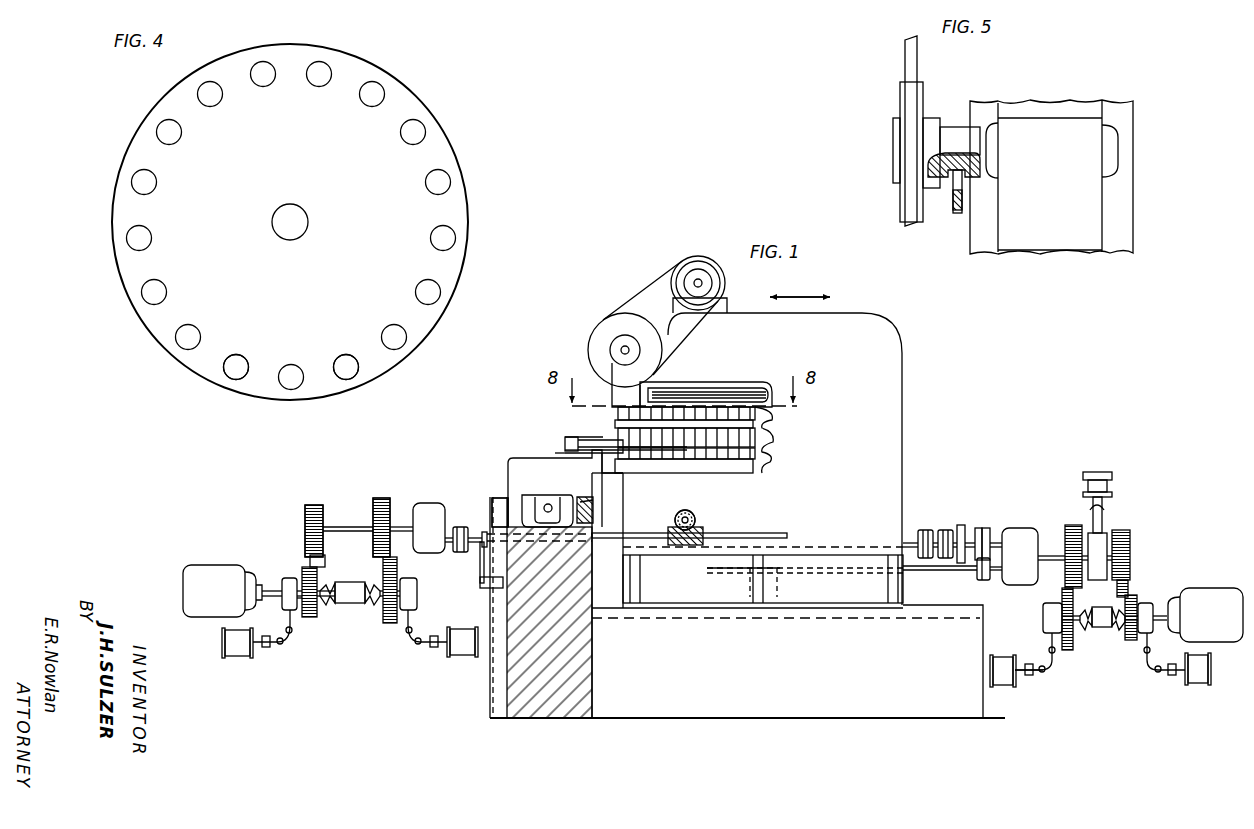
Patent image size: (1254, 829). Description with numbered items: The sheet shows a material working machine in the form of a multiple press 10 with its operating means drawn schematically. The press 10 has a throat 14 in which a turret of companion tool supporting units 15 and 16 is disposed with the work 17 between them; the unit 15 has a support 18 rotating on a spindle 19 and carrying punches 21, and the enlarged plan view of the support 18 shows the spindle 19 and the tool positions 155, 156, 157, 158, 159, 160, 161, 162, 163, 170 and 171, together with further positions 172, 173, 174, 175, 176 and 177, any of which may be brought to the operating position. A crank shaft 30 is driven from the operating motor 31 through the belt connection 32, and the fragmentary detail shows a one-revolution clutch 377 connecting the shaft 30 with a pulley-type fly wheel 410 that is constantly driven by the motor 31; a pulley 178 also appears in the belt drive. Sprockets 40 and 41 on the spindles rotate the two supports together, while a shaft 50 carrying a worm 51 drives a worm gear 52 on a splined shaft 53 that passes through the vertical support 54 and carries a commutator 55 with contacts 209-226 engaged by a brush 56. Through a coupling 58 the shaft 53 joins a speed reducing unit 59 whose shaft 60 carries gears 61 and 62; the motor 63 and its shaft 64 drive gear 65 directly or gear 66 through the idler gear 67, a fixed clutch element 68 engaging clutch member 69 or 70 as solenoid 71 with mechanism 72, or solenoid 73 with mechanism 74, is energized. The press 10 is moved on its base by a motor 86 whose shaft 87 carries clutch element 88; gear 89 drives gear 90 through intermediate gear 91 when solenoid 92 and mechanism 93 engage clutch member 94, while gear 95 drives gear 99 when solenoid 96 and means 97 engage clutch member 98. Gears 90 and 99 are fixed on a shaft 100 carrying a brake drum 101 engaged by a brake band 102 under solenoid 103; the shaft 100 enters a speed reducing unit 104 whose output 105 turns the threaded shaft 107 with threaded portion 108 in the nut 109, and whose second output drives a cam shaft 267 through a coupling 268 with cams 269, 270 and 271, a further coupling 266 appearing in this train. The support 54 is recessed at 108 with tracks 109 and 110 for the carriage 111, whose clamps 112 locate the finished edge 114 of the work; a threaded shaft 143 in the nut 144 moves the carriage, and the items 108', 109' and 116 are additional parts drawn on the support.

In FIG. 5, the multiple press 10 is at (1122, 217).
In FIG. 1, the multiple press 10 is at (888, 358).
In FIG. 1, the opening or throat 14 is at (762, 387).
In FIG. 1, the tool supporting unit 15 is at (772, 438).
In FIG. 1, the companion tool supporting unit 16 is at (753, 475).
In FIG. 1, the material or work 17 is at (611, 432).
In FIG. 4, the support 18 is at (457, 212).
In FIG. 4, the spindle 19 is at (307, 228).
In FIG. 4, the punches 21 is at (240, 363).
In FIG. 5, the crank shaft 30 is at (982, 148).
In FIG. 1, the operating motor 31 is at (721, 273).
In FIG. 5, the belt connection 32 is at (912, 62).
In FIG. 1, the belt connection 32 is at (647, 285).
In FIG. 1, the sprocket 40 is at (692, 387).
In FIG. 1, the sprocket 41 is at (745, 387).
In FIG. 1, the shaft 50 is at (695, 515).
In FIG. 1, the worm 51 is at (676, 515).
In FIG. 1, the worm gear 52 is at (688, 548).
In FIG. 1, the splined shaft 53 is at (753, 532).
In FIG. 1, the vertical support 54 is at (510, 693).
In FIG. 1, the commutator 55 is at (498, 502).
In FIG. 1, the brush 56 is at (498, 590).
In FIG. 1, the coupling 58 is at (460, 526).
In FIG. 1, the speed reducing unit 59 is at (425, 505).
In FIG. 1, the shaft 60 is at (340, 526).
In FIG. 1, the gear 61 is at (382, 497).
In FIG. 1, the gear 62 is at (317, 502).
In FIG. 1, the motor 63 is at (203, 573).
In FIG. 1, the shaft 64 is at (275, 580).
In FIG. 1, the gear 65 is at (390, 625).
In FIG. 1, the gear 66 is at (307, 620).
In FIG. 1, the idler gear 67 is at (324, 560).
In FIG. 1, the clutch element 68 is at (350, 606).
In FIG. 1, the clutch member 69 is at (378, 607).
In FIG. 1, the clutch member 70 is at (320, 600).
In FIG. 1, the solenoid 71 is at (465, 657).
In FIG. 1, the connecting mechanism 72 is at (410, 640).
In FIG. 1, the solenoid 73 is at (232, 658).
In FIG. 1, the connecting mechanism 74 is at (288, 612).
In FIG. 1, the motor 86 is at (1193, 597).
In FIG. 1, the shaft 87 is at (1153, 612).
In FIG. 1, the clutch element 88 is at (1100, 628).
In FIG. 1, the gear 89 is at (1131, 642).
In FIG. 1, the gear 90 is at (1123, 528).
In FIG. 1, the intermediate gear 91 is at (1129, 588).
In FIG. 1, the solenoid 92 is at (1195, 683).
In FIG. 1, the mechanism 93 is at (1148, 672).
In FIG. 1, the clutch member 94 is at (1118, 628).
In FIG. 1, the gear 95 is at (1067, 650).
In FIG. 1, the solenoid 96 is at (1002, 685).
In FIG. 1, the connecting means 97 is at (1050, 672).
In FIG. 1, the clutch member 98 is at (1073, 625).
In FIG. 1, the gear 99 is at (1073, 524).
In FIG. 1, the shaft 100 is at (1053, 561).
In FIG. 1, the brake drum 101 is at (1110, 523).
In FIG. 1, the brake band 102 is at (1093, 520).
In FIG. 1, the solenoid 103 is at (1098, 471).
In FIG. 1, the speed reducing unit 104 is at (1020, 528).
In FIG. 1, the output 105 is at (984, 582).
In FIG. 1, the threaded shaft 107 is at (945, 572).
In FIG. 1, the threaded portion 108 is at (601, 512).
In FIG. 1, the guide 108' is at (769, 584).
In FIG. 1, the nut 109 is at (797, 583).
In FIG. 1, the rail 109' is at (622, 489).
In FIG. 1, the track 110 is at (510, 495).
In FIG. 1, the carriage or work support 111 is at (520, 465).
In FIG. 1, the clamps 112 is at (570, 450).
In FIG. 1, the finished longitudinal edge 114 is at (573, 437).
In FIG. 1, the plate 116 is at (562, 453).
In FIG. 1, the threaded shaft 143 is at (549, 503).
In FIG. 1, the threaded nut 144 is at (542, 512).
In FIG. 4, the tool location 155 is at (313, 388).
In FIG. 4, the tool position 156 is at (247, 383).
In FIG. 4, the tool position 157 is at (165, 332).
In FIG. 4, the tool position 158 is at (133, 285).
In FIG. 4, the tool position 159 is at (120, 238).
In FIG. 4, the tool position 160 is at (127, 193).
In FIG. 4, the tool position 161 is at (150, 142).
In FIG. 4, the tool position 162 is at (192, 90).
In FIG. 4, the tool position 163 is at (248, 62).
In FIG. 4, the tool position 170 is at (332, 58).
In FIG. 4, the tool position 171 is at (390, 87).
In FIG. 4, the hole 172 is at (433, 135).
In FIG. 4, the hole 173 is at (455, 193).
In FIG. 4, the hole 174 is at (458, 248).
In FIG. 4, the hole 175 is at (445, 285).
In FIG. 4, the hole 176 is at (413, 332).
In FIG. 4, the hole 177 is at (363, 370).
In FIG. 1, the pulley 178 is at (597, 337).
In FIG. 1, the contacts 209-226 is at (465, 468).
In FIG. 1, the coupling 266 is at (979, 527).
In FIG. 1, the cam shaft 267 is at (913, 540).
In FIG. 1, the coupling 268 is at (985, 527).
In FIG. 1, the cam 269 is at (916, 520).
In FIG. 1, the cam 270 is at (946, 528).
In FIG. 1, the cam 271 is at (960, 523).
In FIG. 5, the one-revolution clutch 377 is at (944, 212).
In FIG. 5, the pulley-type fly wheel 410 is at (903, 153).